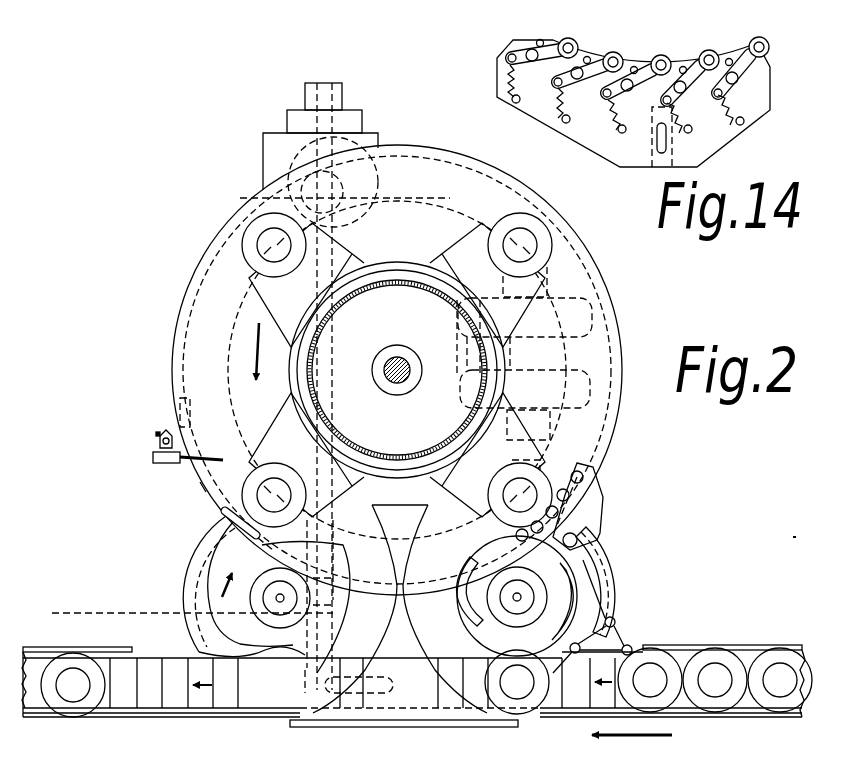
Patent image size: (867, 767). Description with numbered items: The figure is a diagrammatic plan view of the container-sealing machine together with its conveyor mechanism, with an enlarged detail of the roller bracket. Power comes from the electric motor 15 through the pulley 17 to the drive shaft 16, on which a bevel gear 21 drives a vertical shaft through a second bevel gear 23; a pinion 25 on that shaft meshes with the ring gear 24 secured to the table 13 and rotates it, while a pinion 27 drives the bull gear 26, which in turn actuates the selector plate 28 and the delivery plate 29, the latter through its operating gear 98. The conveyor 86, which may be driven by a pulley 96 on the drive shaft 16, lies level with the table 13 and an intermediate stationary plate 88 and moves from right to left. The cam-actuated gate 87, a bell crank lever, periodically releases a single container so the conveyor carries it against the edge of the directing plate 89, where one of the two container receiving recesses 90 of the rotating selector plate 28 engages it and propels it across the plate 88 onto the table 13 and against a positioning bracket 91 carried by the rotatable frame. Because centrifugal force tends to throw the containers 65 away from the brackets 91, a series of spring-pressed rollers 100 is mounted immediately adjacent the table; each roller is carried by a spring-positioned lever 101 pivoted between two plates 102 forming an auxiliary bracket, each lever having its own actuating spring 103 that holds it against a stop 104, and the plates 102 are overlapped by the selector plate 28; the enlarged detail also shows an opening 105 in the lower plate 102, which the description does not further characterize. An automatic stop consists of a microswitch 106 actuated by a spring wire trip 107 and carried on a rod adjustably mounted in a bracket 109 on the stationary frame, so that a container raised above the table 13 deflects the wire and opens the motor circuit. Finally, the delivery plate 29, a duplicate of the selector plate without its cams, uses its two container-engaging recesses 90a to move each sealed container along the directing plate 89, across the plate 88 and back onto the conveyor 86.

In FIG. 2, the table 13 is at (178, 398).
In FIG. 2, the electric motor 15 is at (580, 297).
In FIG. 2, the drive shaft 16 is at (333, 352).
In FIG. 2, the pulley 17 is at (203, 487).
In FIG. 2, the bevel gear 21 is at (290, 142).
In FIG. 2, the bevel gear 23 is at (278, 162).
In FIG. 2, the ring gear 24 is at (428, 203).
In FIG. 2, the pinion 25 is at (357, 193).
In FIG. 2, the bull gear 26 is at (240, 300).
In FIG. 2, the pinion 27 is at (257, 198).
In FIG. 2, the selector plate 28 is at (590, 553).
In FIG. 2, the delivery plate 29 is at (223, 548).
In FIG. 2, the containers 65 is at (248, 244).
In FIG. 2, the conveyor 86 is at (153, 697).
In FIG. 2, the gate 87 is at (620, 632).
In FIG. 2, the stationary plate 88 is at (440, 639).
In FIG. 2, the directing plate 89 is at (408, 727).
In FIG. 2, the container receiving recesses 90 is at (450, 540).
In FIG. 2, the container-engaging recesses 90a is at (240, 510).
In FIG. 2, the positioning bracket 91 is at (353, 243).
In FIG. 2, the pulley 96 is at (345, 628).
In FIG. 2, the operating gear 98 is at (195, 588).
In FIG. 2, the spring-pressed rollers 100 is at (583, 470).
In FIG. 14, the spring-pressed rollers 100 is at (577, 43).
In FIG. 14, the spring-positioned lever 101 is at (522, 47).
In FIG. 2, the plates 102 is at (598, 492).
In FIG. 14, the plates 102 is at (550, 122).
In FIG. 14, the actuating spring 103 is at (510, 73).
In FIG. 14, the stop 104 is at (588, 58).
In FIG. 14, the slot 105 is at (653, 137).
In FIG. 2, the microswitch 106 is at (153, 457).
In FIG. 2, the spring wire trip 107 is at (218, 452).
In FIG. 2, the bracket 109 is at (157, 425).